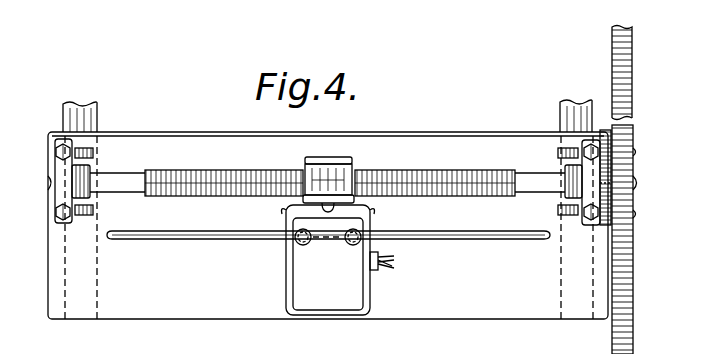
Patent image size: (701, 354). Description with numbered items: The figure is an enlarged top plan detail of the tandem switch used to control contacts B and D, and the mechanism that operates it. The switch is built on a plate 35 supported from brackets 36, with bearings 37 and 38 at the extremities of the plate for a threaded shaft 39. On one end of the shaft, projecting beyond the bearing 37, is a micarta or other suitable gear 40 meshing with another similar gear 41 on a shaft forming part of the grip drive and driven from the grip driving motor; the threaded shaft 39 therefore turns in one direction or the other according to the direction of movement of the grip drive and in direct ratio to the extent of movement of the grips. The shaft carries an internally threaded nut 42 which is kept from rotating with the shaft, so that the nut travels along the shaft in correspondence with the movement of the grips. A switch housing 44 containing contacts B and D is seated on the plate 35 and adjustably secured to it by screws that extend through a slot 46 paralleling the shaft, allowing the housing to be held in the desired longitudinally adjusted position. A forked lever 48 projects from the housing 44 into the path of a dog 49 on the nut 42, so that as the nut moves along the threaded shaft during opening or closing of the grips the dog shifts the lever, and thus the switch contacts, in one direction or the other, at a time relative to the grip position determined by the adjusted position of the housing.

The plate 35 is at (328, 225).
The brackets 36 is at (560, 110).
The bearing 37 is at (590, 226).
The bearing 38 is at (62, 222).
The threaded shaft 39 is at (123, 172).
The gear 40 is at (634, 256).
The gear 41 is at (633, 57).
The internally threaded nut 42 is at (326, 163).
The switch housing 44 is at (340, 259).
The slot 46 is at (484, 232).
The forked lever 48 is at (320, 215).
The dog 49 is at (370, 209).